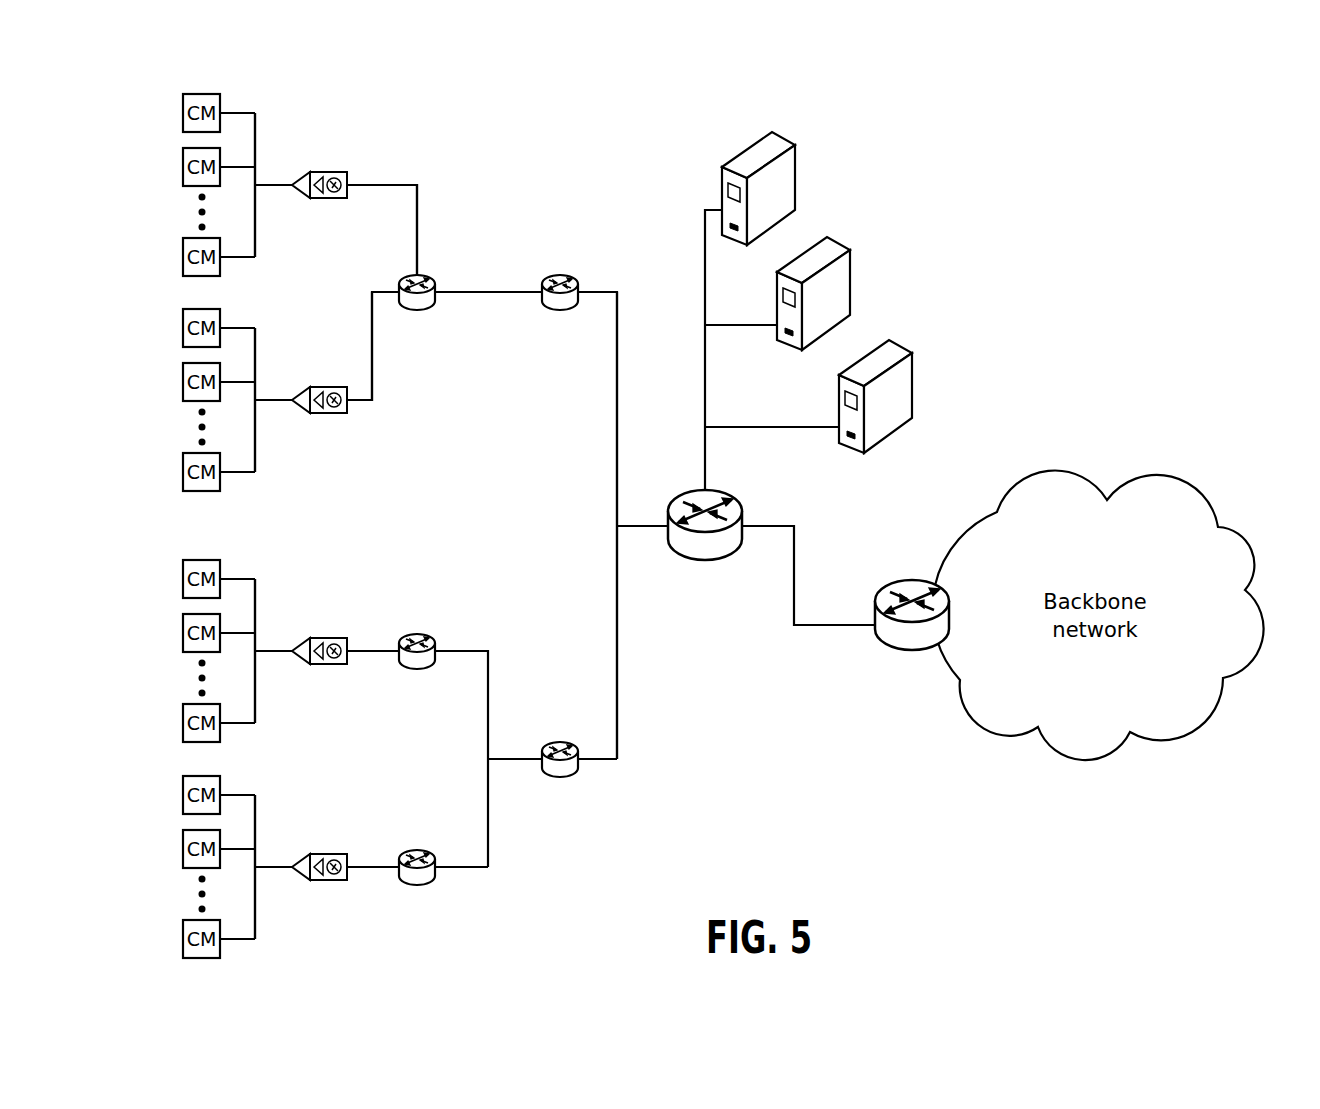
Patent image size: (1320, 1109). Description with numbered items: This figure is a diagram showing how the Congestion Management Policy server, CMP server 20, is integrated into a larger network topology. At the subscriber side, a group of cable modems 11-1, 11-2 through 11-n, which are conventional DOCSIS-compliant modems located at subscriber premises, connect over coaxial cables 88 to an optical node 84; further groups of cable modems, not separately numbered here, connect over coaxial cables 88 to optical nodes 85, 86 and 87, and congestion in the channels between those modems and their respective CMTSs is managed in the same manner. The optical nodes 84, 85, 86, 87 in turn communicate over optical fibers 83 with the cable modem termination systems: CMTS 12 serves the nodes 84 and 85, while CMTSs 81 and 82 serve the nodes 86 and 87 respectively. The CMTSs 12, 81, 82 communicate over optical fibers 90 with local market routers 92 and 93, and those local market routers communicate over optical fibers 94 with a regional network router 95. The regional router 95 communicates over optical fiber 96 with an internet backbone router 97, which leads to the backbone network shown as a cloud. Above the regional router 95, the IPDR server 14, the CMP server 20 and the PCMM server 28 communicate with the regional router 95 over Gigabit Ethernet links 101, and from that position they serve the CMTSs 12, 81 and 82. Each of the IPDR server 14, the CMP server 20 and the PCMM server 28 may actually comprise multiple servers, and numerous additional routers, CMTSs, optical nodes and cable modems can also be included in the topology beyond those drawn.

The cable modem 11-1 is at (182, 102).
The cable modem 11-2 is at (182, 156).
The cable modem 11-n is at (182, 246).
The coaxial cables 88 is at (243, 106).
The optical node 84 is at (325, 172).
The optical node 85 is at (325, 387).
The optical node 86 is at (325, 638).
The optical node 87 is at (325, 853).
The optical fibers 83 is at (393, 184).
The CMTS 12 is at (432, 276).
The CMTS 81 is at (413, 632).
The CMTS 82 is at (415, 849).
The local market router 92 is at (562, 273).
The local market router 93 is at (558, 745).
The optical fibers 90 is at (480, 293).
The optical fibers 94 is at (616, 687).
The regional network router 95 is at (707, 563).
The optical fiber 96 is at (798, 627).
The internet backbone router 97 is at (908, 655).
The Gigabit Ethernet links 101 is at (705, 356).
The IPDR server 14 is at (795, 150).
The CMP server 20 is at (849, 257).
The PCMM server 28 is at (910, 365).